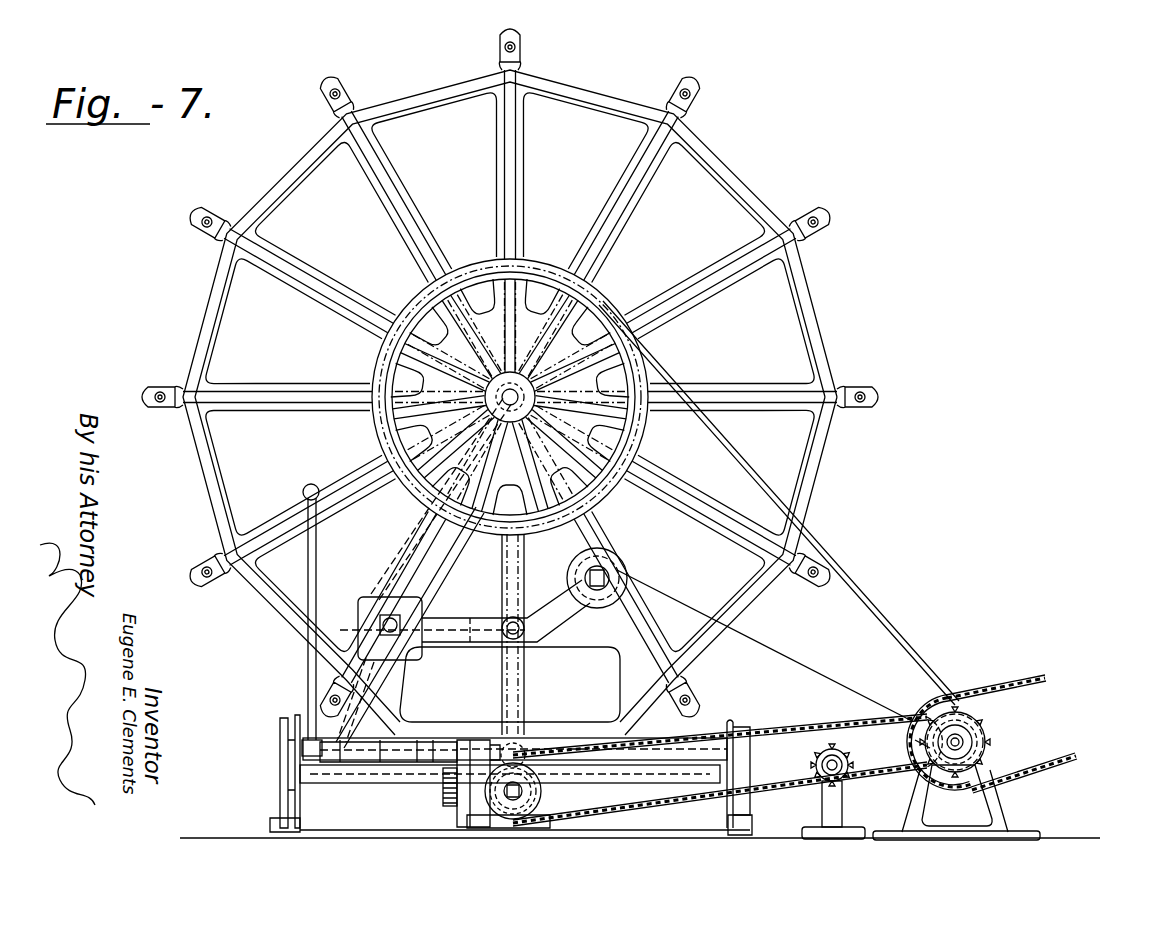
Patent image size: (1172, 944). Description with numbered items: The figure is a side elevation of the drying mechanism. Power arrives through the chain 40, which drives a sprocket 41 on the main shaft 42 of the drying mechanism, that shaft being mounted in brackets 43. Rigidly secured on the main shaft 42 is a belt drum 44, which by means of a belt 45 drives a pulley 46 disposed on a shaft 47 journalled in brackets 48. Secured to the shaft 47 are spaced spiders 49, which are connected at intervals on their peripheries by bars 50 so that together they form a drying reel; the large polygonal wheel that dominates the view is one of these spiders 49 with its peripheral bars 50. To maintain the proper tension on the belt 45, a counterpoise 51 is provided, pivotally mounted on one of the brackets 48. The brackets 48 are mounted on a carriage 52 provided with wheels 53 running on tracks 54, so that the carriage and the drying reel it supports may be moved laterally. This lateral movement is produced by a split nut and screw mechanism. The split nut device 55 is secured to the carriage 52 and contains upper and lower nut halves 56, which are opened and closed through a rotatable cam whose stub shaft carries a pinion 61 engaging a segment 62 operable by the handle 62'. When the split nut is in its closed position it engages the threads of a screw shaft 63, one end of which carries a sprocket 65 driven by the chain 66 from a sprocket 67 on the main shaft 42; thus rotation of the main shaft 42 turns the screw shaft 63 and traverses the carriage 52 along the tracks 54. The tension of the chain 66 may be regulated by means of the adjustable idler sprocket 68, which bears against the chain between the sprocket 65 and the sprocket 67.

The chain 40 is at (1024, 678).
The sprocket 41 is at (998, 726).
The main shaft 42 is at (966, 745).
The brackets 43 is at (1003, 820).
The belt drum 44 is at (907, 718).
The belt 45 is at (870, 608).
The pulley 46 is at (380, 372).
The shaft 47 is at (515, 385).
The brackets 48 is at (485, 553).
The spiders 49 is at (733, 281).
The bars 50 is at (215, 222).
The counterpoise 51 is at (543, 600).
The carriage 52 is at (632, 742).
The wheels 53 is at (280, 742).
The tracks 54 is at (278, 826).
The split nut device 55 is at (470, 822).
The nut halves 56 is at (541, 795).
The pinion 61 is at (455, 808).
The segment 62 is at (407, 701).
The handle 62' is at (327, 620).
The screw shaft 63 is at (532, 775).
The sprocket 65 is at (604, 786).
The chain 66 is at (790, 727).
The sprocket 67 is at (918, 748).
The adjustable idler sprocket 68 is at (815, 763).